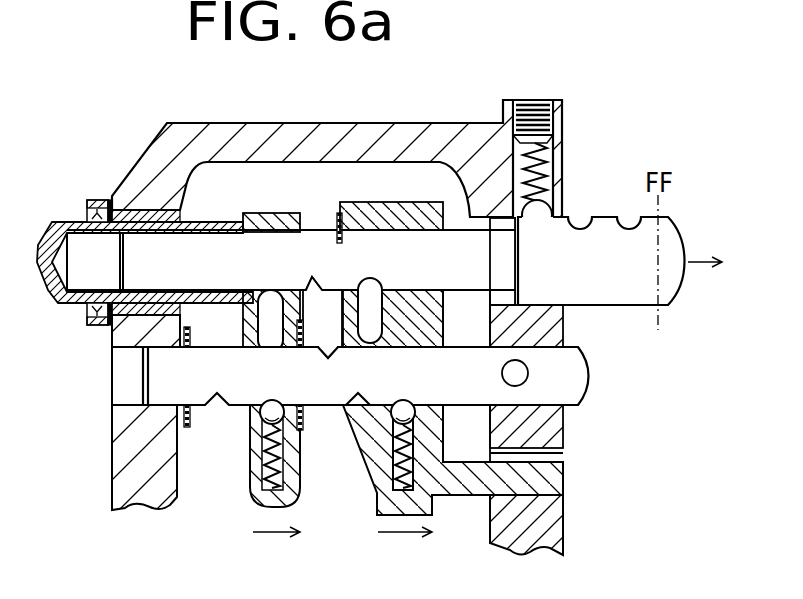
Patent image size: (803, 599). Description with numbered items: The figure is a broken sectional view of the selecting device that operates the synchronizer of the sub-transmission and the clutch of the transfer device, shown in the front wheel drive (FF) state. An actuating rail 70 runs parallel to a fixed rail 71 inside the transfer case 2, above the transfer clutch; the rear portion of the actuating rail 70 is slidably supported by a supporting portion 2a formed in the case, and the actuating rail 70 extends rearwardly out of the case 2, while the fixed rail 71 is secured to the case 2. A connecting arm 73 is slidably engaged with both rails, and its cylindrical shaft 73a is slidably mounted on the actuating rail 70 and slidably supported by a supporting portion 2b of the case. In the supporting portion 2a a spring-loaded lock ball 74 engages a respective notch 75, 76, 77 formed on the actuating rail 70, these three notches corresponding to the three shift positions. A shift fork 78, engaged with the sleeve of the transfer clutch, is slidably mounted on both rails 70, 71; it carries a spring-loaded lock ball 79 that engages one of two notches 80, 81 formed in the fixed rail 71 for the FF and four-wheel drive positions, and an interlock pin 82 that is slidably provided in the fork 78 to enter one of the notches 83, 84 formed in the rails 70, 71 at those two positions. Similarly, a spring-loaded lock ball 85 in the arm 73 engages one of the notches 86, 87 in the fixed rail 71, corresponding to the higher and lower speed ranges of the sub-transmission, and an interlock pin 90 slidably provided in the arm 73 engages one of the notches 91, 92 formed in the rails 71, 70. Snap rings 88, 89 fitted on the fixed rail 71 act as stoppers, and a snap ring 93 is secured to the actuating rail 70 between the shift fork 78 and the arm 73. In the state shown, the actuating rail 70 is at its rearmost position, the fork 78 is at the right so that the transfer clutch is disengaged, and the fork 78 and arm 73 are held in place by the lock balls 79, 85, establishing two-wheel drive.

The transfer case 2 is at (322, 123).
The supporting portion 2a is at (503, 205).
The supporting portion 2b is at (140, 210).
The actuating rail 70 is at (627, 293).
The fixed rail 71 is at (563, 360).
The connecting arm 73 is at (250, 490).
The cylindrical shaft 73a is at (72, 306).
The spring-loaded lock ball 74 is at (543, 208).
The notch 75 is at (547, 230).
The notch 76 is at (583, 226).
The notch 77 is at (630, 226).
The shift fork 78 is at (378, 220).
The spring-loaded lock ball 79 is at (415, 413).
The notch 80 is at (410, 400).
The notch 81 is at (352, 403).
The interlock pin 82 is at (370, 333).
The notch 83 is at (368, 280).
The notch 84 is at (330, 357).
The spring-loaded lock ball 85 is at (248, 428).
The notch 86 is at (280, 378).
The notch 87 is at (218, 398).
The snap ring 88 is at (303, 423).
The snap ring 89 is at (188, 423).
The interlock pin 90 is at (262, 320).
The notch 91 is at (263, 352).
The notch 92 is at (310, 280).
The snap ring 93 is at (340, 213).